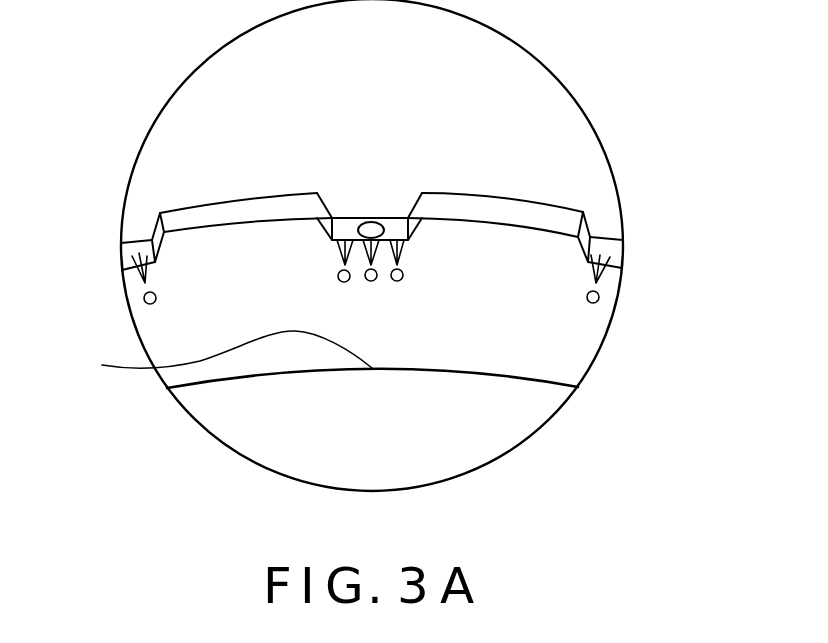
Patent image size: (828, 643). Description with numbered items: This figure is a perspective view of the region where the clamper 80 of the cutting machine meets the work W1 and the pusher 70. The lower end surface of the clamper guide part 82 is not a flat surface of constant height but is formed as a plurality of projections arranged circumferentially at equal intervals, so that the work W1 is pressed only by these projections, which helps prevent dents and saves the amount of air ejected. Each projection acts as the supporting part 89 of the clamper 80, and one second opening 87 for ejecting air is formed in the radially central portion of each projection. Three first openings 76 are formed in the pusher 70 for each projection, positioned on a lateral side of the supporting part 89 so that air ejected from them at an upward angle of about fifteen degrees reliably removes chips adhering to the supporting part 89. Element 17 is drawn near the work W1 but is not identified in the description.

The clamper 80 is at (520, 87).
The clamper guide part 82 is at (220, 88).
The pusher 70 is at (558, 322).
The supporting part 89 is at (397, 223).
The second opening 87 is at (368, 222).
The first opening 76 is at (401, 277).
The stage surface 17 is at (216, 353).
The work W1 is at (280, 425).